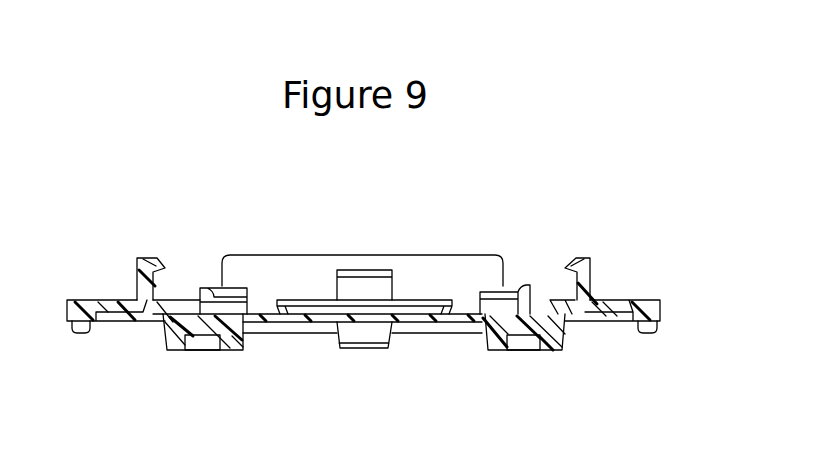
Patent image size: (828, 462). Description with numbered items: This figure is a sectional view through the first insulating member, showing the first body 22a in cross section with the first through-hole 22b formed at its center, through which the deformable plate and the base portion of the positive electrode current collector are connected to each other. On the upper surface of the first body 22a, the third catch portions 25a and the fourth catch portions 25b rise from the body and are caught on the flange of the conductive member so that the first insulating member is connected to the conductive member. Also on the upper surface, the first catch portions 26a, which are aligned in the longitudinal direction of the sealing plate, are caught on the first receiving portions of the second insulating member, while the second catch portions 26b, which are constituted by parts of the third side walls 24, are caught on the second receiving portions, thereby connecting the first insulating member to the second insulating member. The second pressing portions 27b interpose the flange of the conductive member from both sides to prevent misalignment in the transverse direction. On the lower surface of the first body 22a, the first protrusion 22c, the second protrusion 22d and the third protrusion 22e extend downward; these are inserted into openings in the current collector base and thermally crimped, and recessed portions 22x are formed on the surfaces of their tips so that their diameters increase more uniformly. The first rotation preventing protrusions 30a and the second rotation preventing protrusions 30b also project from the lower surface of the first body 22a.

The first body 22a is at (265, 314).
The first through-hole 22b is at (330, 326).
The first protrusion 22c is at (170, 352).
The second protrusion 22d is at (553, 352).
The third protrusion 22e is at (369, 335).
The recessed portions 22x is at (204, 342).
The third side walls 24 is at (296, 270).
The third catch portions 25a is at (212, 290).
The fourth catch portions 25b is at (517, 287).
The first catch portions 26a is at (149, 266).
The second catch portions 26b is at (365, 276).
The second pressing portions 27b is at (412, 305).
The first rotation preventing protrusions 30a is at (643, 334).
The second rotation preventing protrusions 30b is at (81, 334).